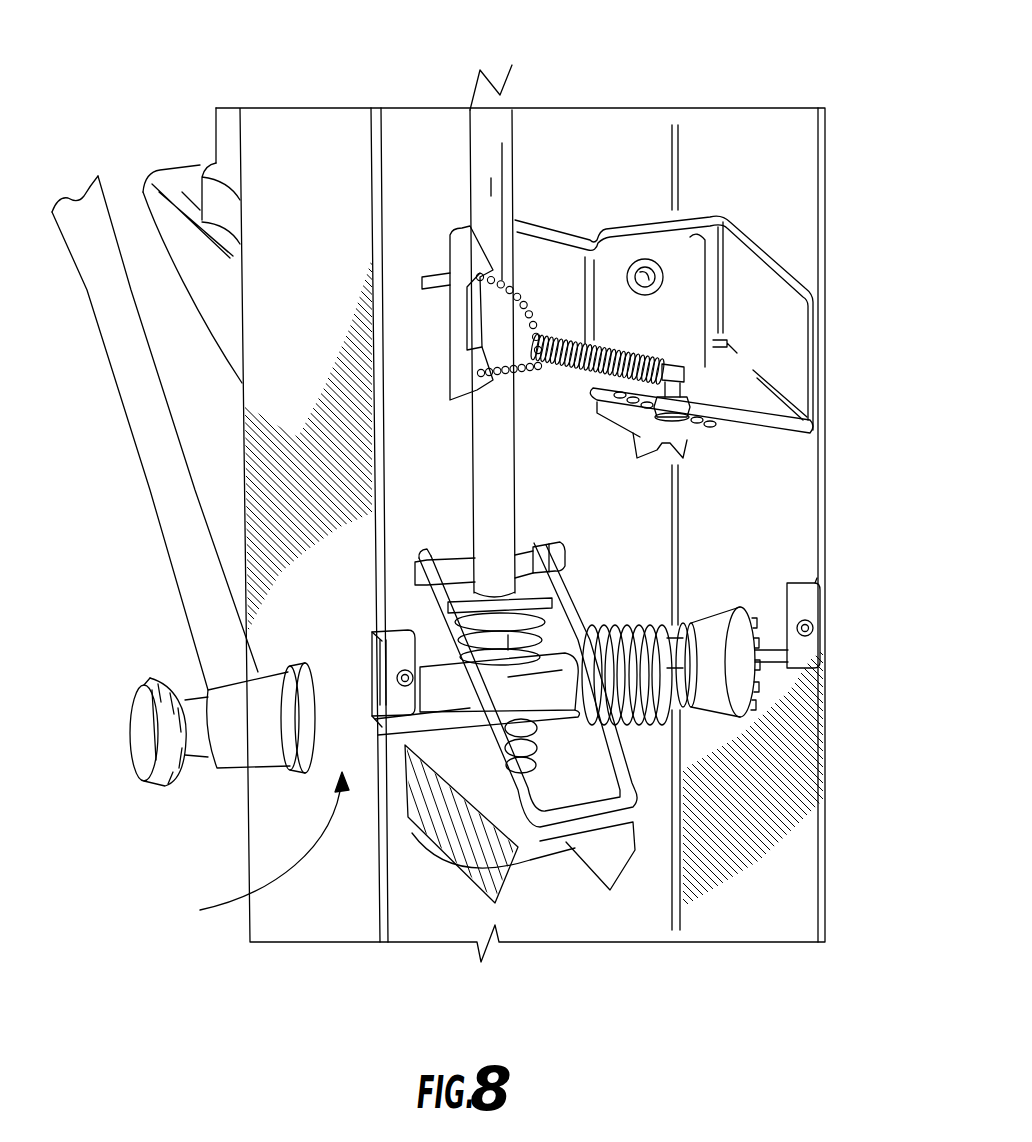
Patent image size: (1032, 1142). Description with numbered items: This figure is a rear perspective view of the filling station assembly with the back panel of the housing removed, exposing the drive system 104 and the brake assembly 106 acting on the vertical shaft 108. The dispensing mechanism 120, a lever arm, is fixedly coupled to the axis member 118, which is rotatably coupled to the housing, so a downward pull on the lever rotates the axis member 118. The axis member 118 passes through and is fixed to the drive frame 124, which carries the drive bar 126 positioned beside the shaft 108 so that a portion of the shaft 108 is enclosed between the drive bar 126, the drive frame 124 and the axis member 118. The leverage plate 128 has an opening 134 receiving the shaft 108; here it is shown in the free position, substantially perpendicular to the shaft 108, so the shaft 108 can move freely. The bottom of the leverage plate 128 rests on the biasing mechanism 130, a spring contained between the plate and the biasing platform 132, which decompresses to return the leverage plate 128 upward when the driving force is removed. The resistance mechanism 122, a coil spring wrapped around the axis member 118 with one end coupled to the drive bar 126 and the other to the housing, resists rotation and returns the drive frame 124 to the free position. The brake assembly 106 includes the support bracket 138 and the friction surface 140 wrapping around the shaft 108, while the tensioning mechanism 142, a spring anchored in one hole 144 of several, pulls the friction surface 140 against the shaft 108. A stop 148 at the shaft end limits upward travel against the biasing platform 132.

The drive system 104 is at (247, 850).
The brake assembly 106 is at (722, 172).
The shaft 108 is at (470, 156).
The axis member 118 is at (690, 645).
The dispensing mechanism 120 is at (130, 427).
The resistance mechanism 122 is at (667, 687).
The drive frame 124 is at (637, 793).
The drive bar 126 is at (452, 558).
The leverage plate 128 is at (527, 583).
The biasing mechanism 130 is at (528, 753).
The biasing platform 132 is at (620, 878).
The opening 134 is at (548, 570).
The support bracket 138 is at (760, 250).
The friction surface 140 is at (533, 233).
The tensioning mechanism 142 is at (637, 357).
The hole 144 is at (712, 420).
The stop 148 is at (418, 860).